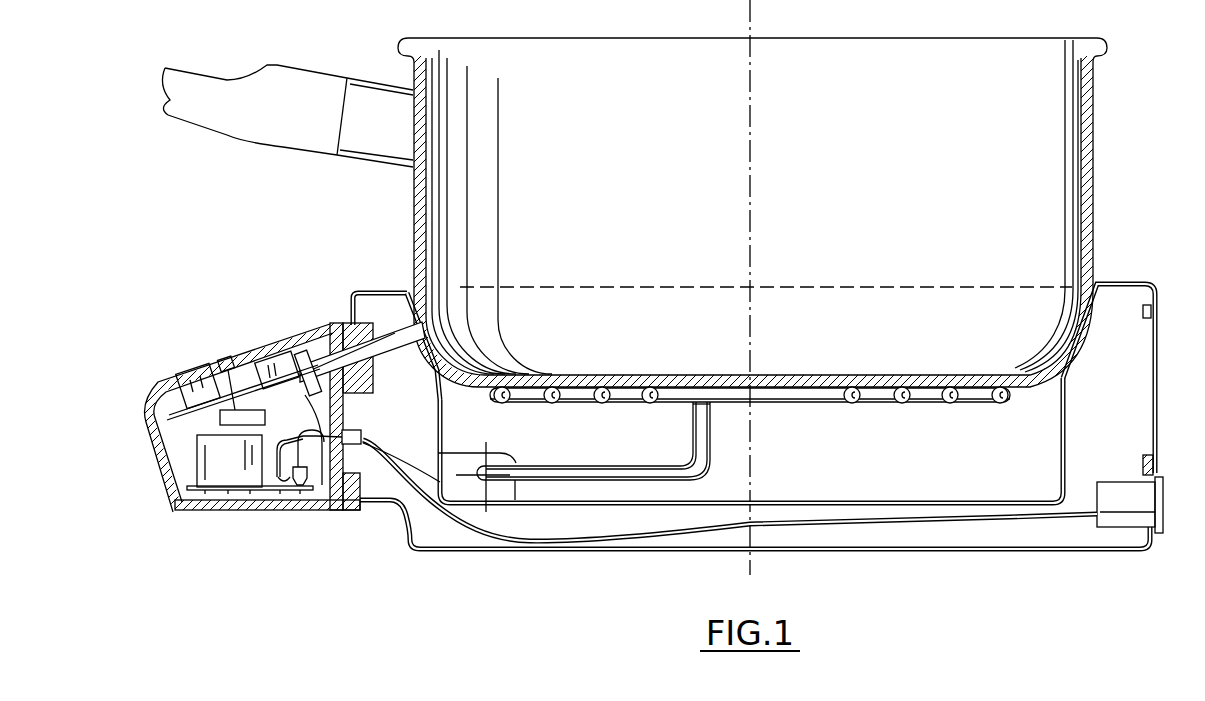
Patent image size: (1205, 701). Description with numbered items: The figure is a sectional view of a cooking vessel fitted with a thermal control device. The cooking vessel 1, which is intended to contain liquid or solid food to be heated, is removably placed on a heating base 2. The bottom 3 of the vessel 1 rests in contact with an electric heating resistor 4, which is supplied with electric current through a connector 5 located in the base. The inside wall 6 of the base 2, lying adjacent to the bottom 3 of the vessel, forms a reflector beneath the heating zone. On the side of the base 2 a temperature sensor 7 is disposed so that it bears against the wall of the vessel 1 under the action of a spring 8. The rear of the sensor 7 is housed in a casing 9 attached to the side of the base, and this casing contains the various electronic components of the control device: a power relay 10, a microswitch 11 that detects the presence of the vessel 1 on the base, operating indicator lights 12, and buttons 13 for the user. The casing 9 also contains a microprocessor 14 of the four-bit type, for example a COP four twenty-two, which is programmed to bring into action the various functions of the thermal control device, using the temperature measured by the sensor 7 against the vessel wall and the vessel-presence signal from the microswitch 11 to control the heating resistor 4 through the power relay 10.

The cooking vessel 1 is at (1093, 137).
The heating base 2 is at (1158, 372).
The bottom 3 is at (778, 391).
The electric heating resistor 4 is at (848, 402).
The connector 5 is at (1120, 510).
The inside wall 6 is at (850, 497).
The temperature sensor 7 is at (390, 323).
The spring 8 is at (307, 400).
The casing 9 is at (158, 465).
The power relay 10 is at (204, 462).
The microswitch 11 is at (280, 362).
The operating indicator lights 12 is at (224, 366).
The buttons 13 is at (195, 395).
The microprocessor 14 is at (240, 414).